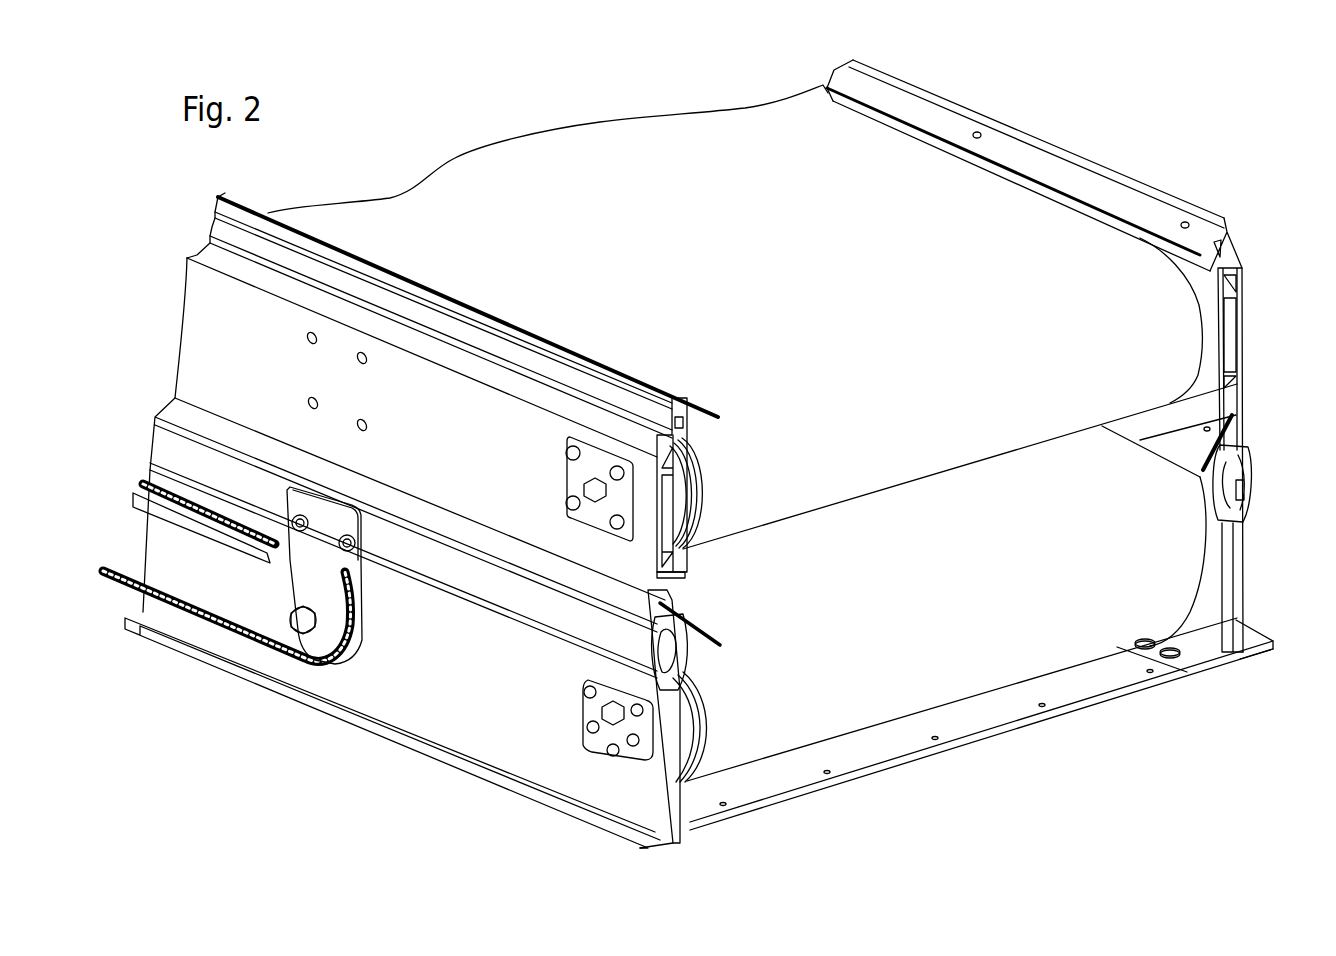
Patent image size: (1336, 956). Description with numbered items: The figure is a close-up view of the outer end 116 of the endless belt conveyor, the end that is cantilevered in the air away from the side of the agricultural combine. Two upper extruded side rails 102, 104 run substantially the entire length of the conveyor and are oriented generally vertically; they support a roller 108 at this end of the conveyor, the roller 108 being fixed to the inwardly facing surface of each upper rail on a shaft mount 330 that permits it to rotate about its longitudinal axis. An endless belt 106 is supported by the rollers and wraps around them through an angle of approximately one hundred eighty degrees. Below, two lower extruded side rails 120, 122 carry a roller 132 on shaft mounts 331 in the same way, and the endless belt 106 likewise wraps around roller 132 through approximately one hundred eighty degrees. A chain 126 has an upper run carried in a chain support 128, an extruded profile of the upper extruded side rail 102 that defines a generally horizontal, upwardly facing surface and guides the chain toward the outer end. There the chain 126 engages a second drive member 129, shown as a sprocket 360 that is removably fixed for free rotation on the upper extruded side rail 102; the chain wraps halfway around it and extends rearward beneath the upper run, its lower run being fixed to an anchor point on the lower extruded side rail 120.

The upper extruded side rail 102 is at (200, 314).
The upper extruded side rail 104 is at (1241, 310).
The endless belt 106 is at (749, 208).
The roller 108 is at (694, 490).
The outer end 116 is at (1050, 770).
The lower extruded side rail 120 is at (243, 657).
The lower extruded side rail 122 is at (1253, 633).
The chain 126 is at (165, 598).
The chain support 128 is at (190, 528).
The second drive member 129 is at (302, 638).
The sprocket 360 is at (333, 665).
The roller 132 is at (702, 720).
The shaft mount 330 is at (593, 518).
The shaft mount 331 is at (600, 740).